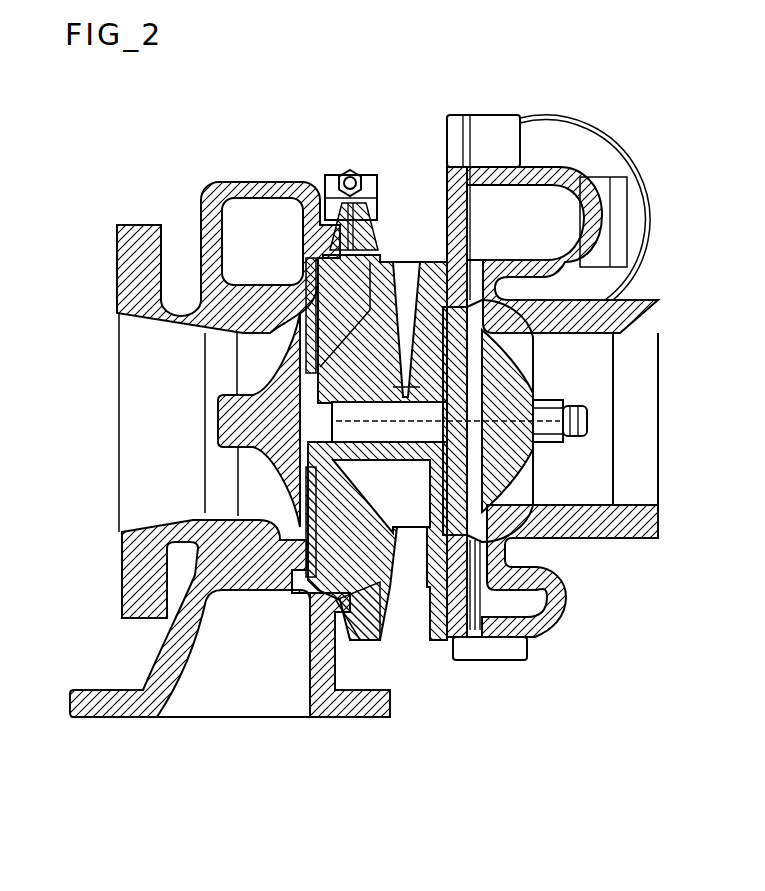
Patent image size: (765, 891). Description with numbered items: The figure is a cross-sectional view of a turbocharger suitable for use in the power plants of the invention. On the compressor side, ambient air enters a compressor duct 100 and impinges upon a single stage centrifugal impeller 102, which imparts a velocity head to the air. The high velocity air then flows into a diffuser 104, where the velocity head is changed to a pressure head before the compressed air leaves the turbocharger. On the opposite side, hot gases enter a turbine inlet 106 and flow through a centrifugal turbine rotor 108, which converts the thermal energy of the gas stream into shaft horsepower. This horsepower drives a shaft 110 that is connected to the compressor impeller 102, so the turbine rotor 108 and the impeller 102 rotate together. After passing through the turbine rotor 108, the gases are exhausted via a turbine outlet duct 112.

The compressor duct 100 is at (643, 512).
The centrifugal impeller 102 is at (522, 483).
The diffuser 104 is at (560, 198).
The turbine inlet 106 is at (225, 696).
The centrifugal turbine rotor 108 is at (245, 360).
The shaft 110 is at (366, 458).
The turbine outlet duct 112 is at (155, 522).